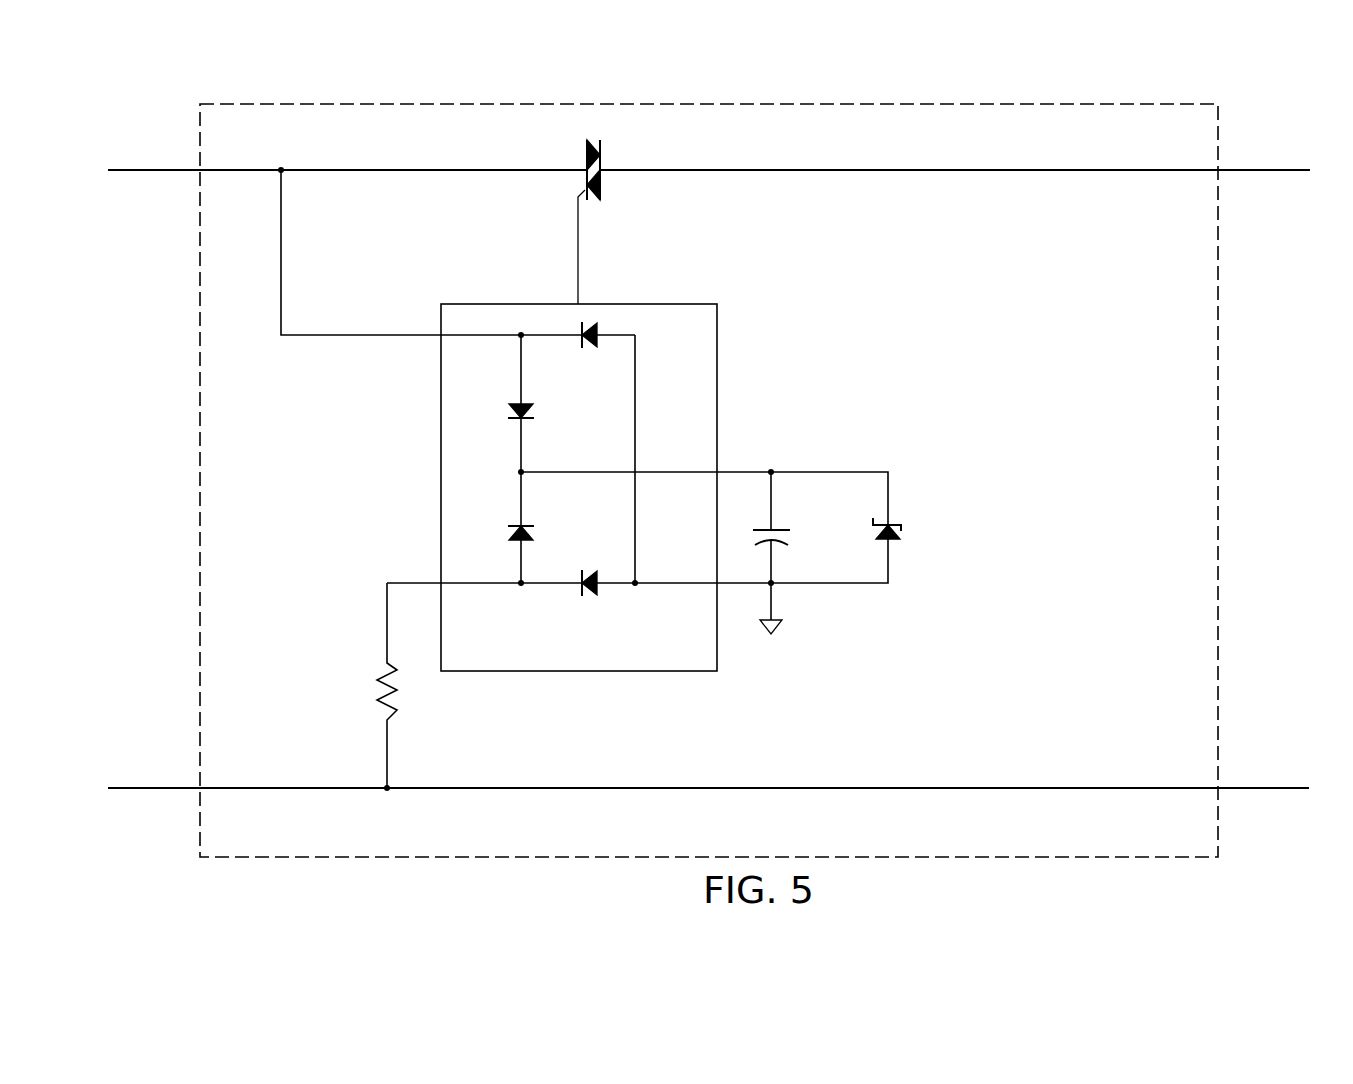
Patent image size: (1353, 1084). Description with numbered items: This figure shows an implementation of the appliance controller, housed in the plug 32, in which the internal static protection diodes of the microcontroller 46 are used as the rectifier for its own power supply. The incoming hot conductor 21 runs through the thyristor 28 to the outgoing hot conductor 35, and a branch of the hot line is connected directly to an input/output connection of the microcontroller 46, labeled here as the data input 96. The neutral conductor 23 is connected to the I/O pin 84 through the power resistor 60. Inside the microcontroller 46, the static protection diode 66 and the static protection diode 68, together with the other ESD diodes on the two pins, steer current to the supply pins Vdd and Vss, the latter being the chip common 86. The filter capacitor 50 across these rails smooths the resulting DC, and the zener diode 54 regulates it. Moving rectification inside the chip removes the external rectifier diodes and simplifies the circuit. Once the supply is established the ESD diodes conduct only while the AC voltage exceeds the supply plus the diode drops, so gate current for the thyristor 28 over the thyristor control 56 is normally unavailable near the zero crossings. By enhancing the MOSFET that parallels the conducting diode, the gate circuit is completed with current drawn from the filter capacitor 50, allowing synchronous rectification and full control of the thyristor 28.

The incoming hot conductor 21 is at (170, 172).
The neutral conductor 23 is at (142, 790).
The thyristor 28 is at (602, 155).
The plug 32 is at (590, 858).
The outgoing hot conductor 35 is at (1253, 172).
The microcontroller 46 is at (600, 671).
The filter capacitor 50 is at (780, 537).
The zener diode 54 is at (902, 531).
The thyristor control 56 is at (578, 271).
The power resistor 60 is at (377, 690).
The static protection diode 66 is at (512, 415).
The static protection diode 68 is at (589, 350).
The I/O pin 84 is at (387, 583).
The chip common 86 is at (775, 630).
The data input 96 is at (362, 334).